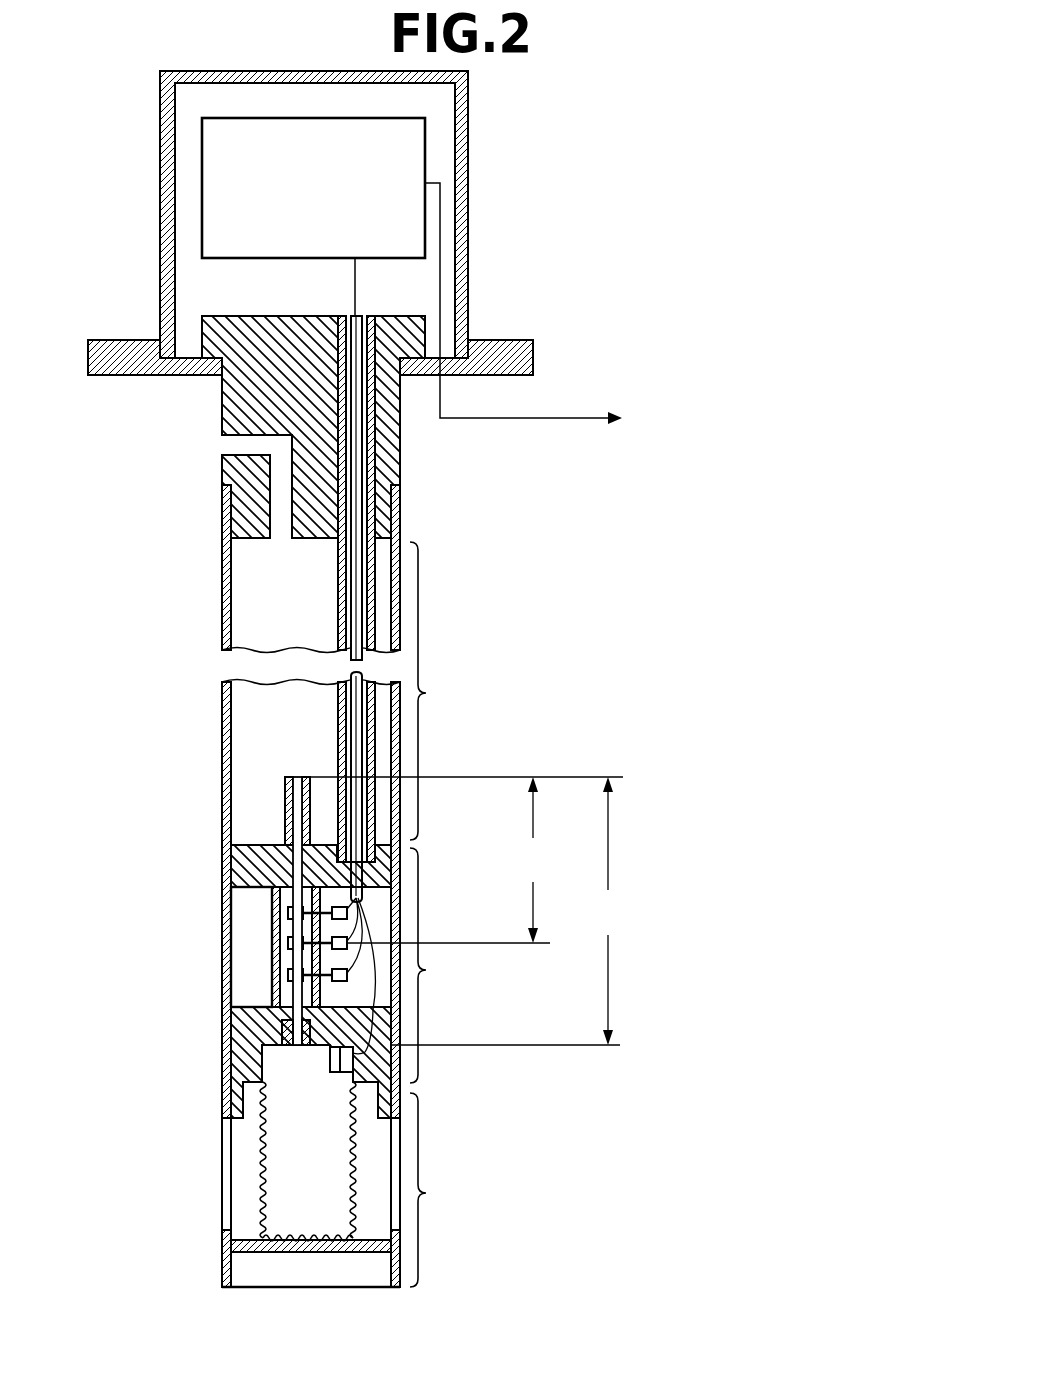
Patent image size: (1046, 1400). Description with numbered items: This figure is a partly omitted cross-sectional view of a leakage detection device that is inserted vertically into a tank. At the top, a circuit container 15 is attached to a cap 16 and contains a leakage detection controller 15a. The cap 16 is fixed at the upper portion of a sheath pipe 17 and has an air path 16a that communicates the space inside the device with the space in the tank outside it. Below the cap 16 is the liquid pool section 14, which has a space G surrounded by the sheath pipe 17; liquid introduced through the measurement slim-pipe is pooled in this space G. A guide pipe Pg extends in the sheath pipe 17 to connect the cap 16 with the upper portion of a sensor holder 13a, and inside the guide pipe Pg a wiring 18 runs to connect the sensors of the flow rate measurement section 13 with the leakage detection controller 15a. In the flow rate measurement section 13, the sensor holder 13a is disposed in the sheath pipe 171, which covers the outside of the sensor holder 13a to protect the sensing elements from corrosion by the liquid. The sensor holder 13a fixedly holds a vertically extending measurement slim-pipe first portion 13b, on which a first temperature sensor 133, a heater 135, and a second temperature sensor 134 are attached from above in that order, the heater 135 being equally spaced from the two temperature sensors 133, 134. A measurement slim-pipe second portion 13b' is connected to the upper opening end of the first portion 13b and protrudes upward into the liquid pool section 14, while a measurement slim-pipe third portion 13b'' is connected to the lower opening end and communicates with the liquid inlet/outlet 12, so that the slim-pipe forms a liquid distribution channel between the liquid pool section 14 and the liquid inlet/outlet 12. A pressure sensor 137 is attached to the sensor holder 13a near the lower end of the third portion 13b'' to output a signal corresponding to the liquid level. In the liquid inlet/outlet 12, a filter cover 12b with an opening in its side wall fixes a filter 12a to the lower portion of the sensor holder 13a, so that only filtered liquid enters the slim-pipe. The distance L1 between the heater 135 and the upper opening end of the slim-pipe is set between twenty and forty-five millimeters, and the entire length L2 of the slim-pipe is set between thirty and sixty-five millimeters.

The circuit container 15 is at (468, 165).
The leakage detection controller 15a is at (202, 185).
The cap 16 is at (400, 465).
The air path 16a is at (232, 446).
The sheath pipe 17 is at (226, 722).
The wiring 18 is at (356, 567).
The guide pipe Pg is at (338, 617).
The space G is at (252, 766).
The liquid pool section 14 is at (426, 693).
The flow rate measurement section 13 is at (426, 970).
The liquid inlet/outlet 12 is at (426, 1193).
The sensor holder 13a is at (240, 862).
The measurement slim-pipe first portion 13b is at (221, 911).
The measurement slim-pipe second portion 13b' is at (221, 811).
The measurement slim-pipe third portion 13b'' is at (227, 1064).
The first temperature sensor 133 is at (272, 925).
The second temperature sensor 134 is at (272, 978).
The heater 135 is at (273, 950).
The sheath pipe 171 is at (262, 1033).
The pressure sensor 137 is at (330, 1062).
The filter 12a is at (262, 1147).
The filter cover 12b is at (231, 1250).
The distance L1 is at (466, 911).
The entire length L2 is at (608, 911).